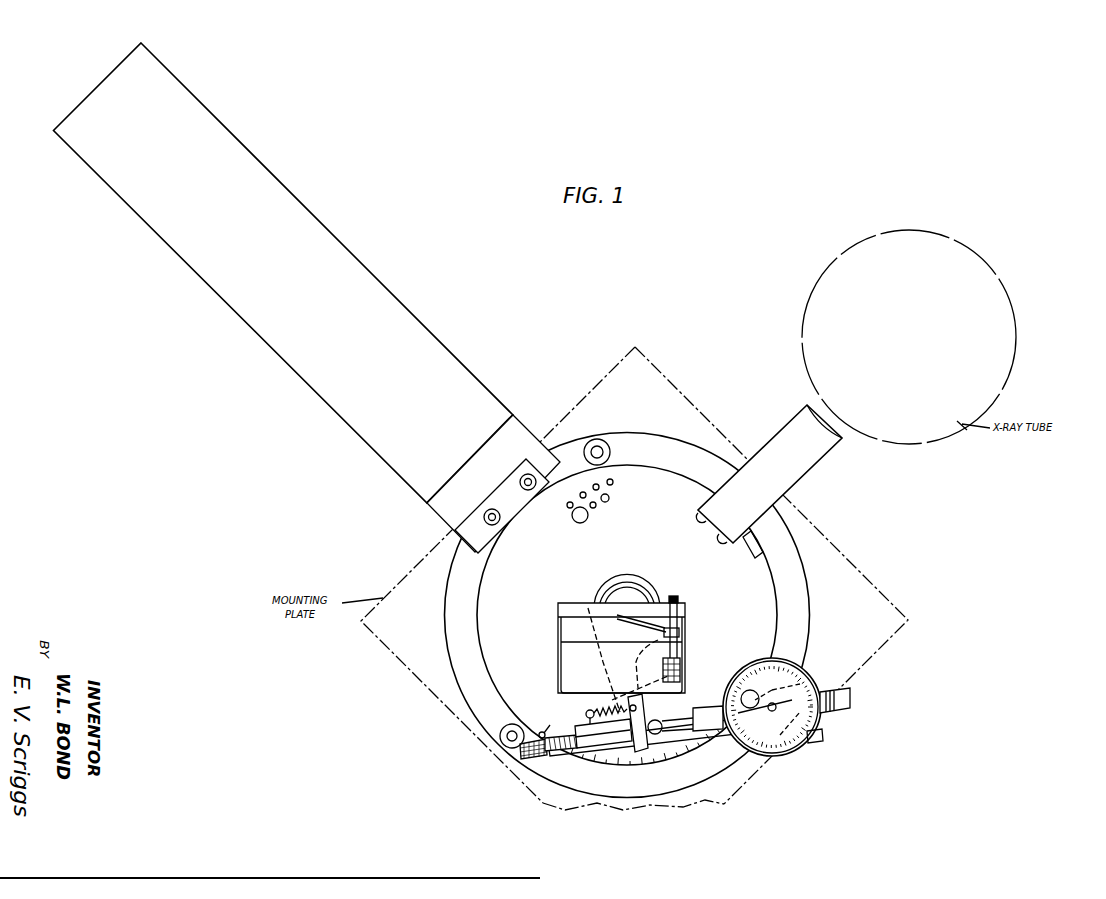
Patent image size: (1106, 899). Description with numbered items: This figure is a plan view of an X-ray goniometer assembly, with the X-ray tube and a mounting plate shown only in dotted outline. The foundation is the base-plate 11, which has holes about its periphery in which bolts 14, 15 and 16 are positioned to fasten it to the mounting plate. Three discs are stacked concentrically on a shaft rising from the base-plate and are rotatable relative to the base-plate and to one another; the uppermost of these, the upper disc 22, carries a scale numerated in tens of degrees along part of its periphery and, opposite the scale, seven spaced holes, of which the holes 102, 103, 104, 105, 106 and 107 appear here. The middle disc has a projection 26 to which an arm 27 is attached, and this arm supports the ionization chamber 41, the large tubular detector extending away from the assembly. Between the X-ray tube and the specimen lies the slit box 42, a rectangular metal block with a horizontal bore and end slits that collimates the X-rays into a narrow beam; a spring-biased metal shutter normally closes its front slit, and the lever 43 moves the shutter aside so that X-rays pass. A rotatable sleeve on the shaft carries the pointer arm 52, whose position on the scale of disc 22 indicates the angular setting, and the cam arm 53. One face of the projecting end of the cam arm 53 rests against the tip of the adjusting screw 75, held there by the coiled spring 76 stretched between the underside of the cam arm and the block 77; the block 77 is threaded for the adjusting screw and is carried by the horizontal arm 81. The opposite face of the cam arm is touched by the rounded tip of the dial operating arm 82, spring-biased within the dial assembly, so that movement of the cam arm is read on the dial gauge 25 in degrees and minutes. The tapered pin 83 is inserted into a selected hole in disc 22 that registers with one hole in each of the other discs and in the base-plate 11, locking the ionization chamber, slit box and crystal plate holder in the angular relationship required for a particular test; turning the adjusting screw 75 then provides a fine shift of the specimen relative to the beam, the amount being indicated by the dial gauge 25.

The base-plate 11 is at (805, 626).
The upper disc 22 is at (767, 588).
The ionization chamber 41 is at (477, 378).
The arm 27 is at (519, 429).
The projection 26 is at (536, 466).
The slit box 42 is at (800, 472).
The lever 43 is at (742, 551).
The bolt 15 is at (609, 417).
The hole 105 is at (580, 495).
The hole 107 is at (613, 482).
The hole 106 is at (600, 489).
The hole 103 is at (608, 502).
The hole 104 is at (568, 507).
The hole 102 is at (596, 509).
The tapered pin 83 is at (578, 523).
The pointer arm 52 is at (682, 690).
The block 77 is at (587, 752).
The adjusting screw 75 is at (530, 762).
The bolt 14 is at (501, 740).
The cam arm 53 is at (625, 699).
The coiled spring 76 is at (593, 710).
The dial operating arm 82 is at (688, 712).
The horizontal arm 81 is at (716, 706).
The bolt 16 is at (797, 661).
The dial gauge 25 is at (819, 714).